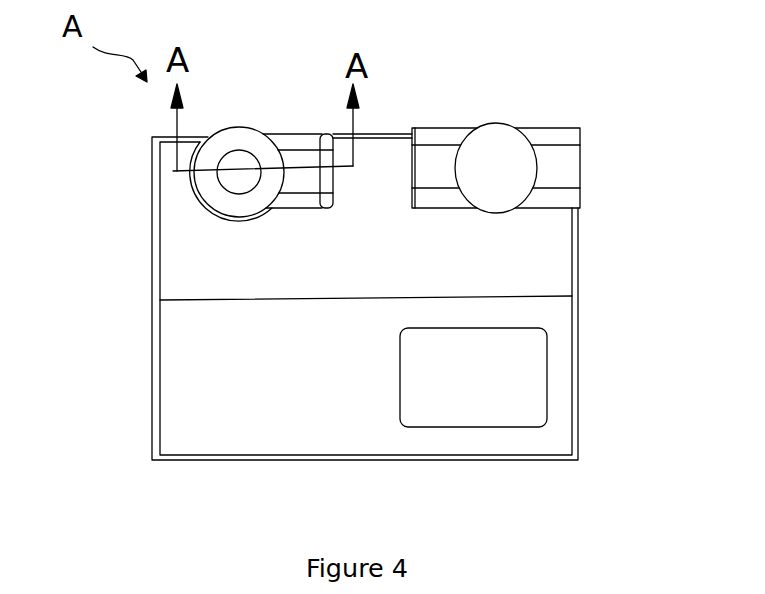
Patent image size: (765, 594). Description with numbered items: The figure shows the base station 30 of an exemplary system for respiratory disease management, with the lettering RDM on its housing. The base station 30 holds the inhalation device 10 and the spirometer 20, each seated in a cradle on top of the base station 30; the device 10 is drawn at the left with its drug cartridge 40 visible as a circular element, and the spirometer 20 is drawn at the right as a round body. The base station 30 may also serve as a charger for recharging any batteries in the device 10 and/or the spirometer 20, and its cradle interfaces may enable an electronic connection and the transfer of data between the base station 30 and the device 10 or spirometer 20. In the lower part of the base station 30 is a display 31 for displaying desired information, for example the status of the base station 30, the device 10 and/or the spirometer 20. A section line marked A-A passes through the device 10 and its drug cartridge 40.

The device 10 is at (272, 132).
The spirometer 20 is at (510, 147).
The base station 30 is at (586, 238).
The display 31 is at (518, 368).
The drug cartridge 40 is at (222, 172).